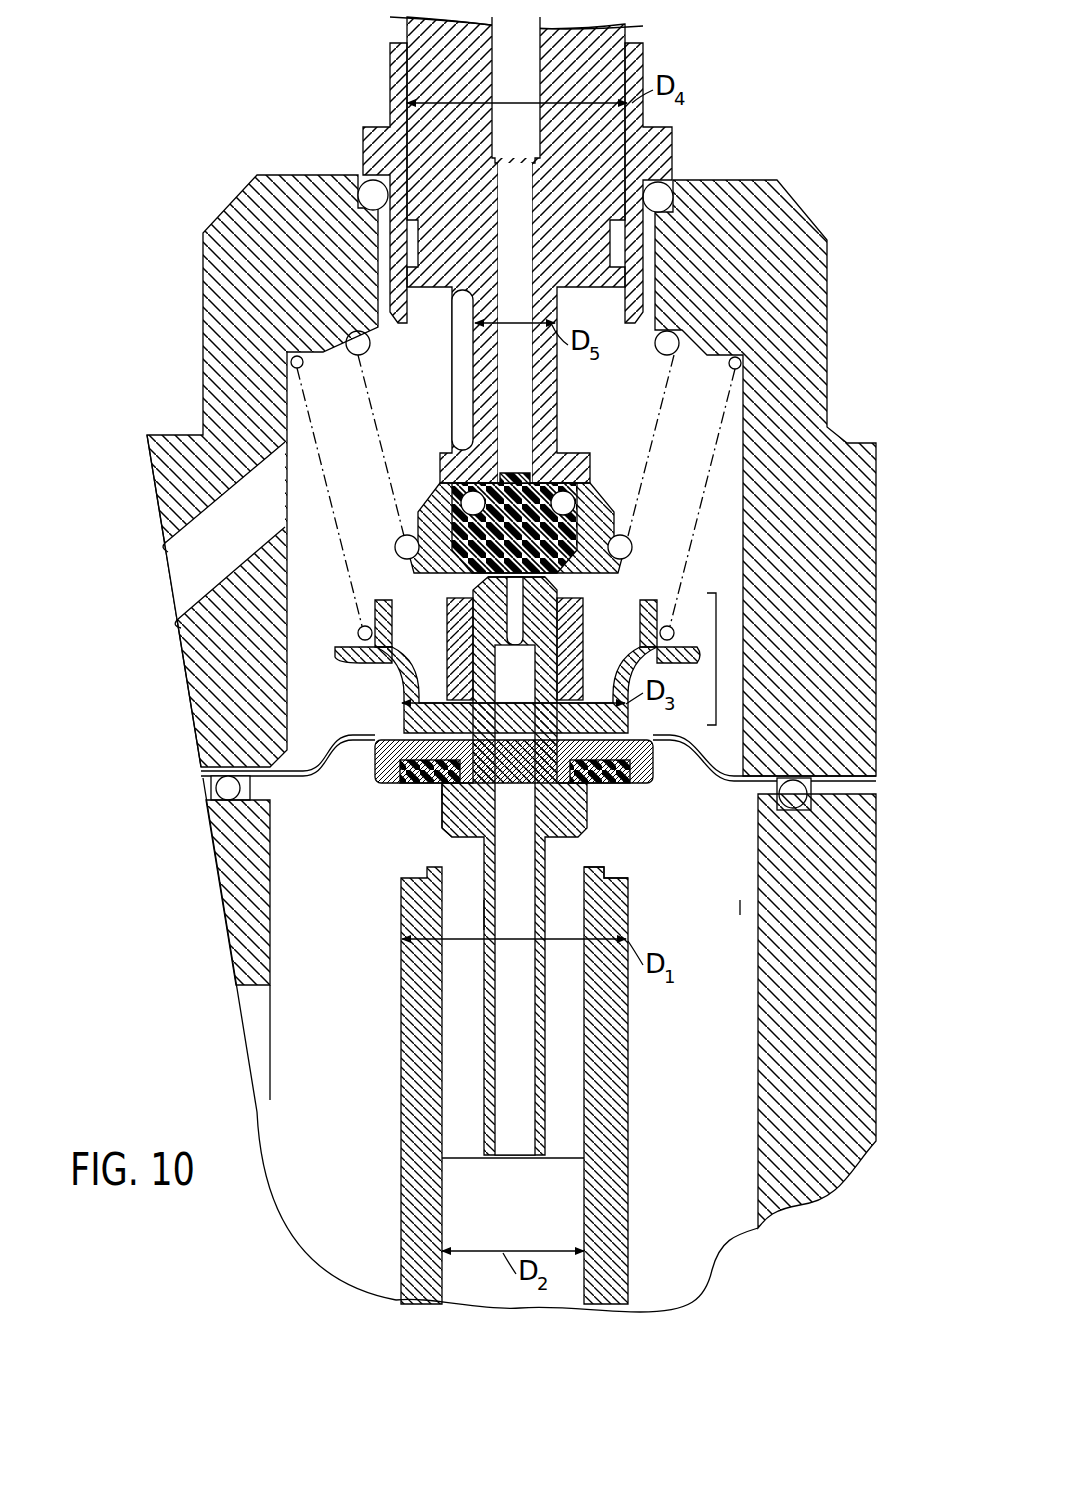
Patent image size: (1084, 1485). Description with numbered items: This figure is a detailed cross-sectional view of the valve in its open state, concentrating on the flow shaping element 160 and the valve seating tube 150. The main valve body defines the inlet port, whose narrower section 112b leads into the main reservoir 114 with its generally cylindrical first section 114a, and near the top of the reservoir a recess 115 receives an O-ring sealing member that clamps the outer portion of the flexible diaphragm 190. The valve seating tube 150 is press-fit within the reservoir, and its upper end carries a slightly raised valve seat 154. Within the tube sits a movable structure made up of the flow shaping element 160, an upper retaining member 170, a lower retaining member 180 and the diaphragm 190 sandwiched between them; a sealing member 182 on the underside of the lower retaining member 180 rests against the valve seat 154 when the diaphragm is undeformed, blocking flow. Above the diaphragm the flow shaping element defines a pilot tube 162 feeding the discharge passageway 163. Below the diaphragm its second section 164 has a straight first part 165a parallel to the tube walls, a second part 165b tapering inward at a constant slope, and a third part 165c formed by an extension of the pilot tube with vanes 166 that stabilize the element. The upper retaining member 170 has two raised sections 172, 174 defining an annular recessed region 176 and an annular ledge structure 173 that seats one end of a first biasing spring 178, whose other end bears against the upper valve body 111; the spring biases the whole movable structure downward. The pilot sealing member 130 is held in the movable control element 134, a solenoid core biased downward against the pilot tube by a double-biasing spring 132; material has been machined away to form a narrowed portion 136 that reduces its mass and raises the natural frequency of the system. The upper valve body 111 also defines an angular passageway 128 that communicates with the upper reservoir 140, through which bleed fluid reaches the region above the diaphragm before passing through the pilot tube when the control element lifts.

The upper valve body 111 is at (246, 188).
The second section of inlet port 112b is at (245, 1000).
The main reservoir 114 is at (722, 1036).
The first section of main reservoir 114a is at (740, 912).
The recess 115 is at (250, 790).
The angular passageway 128 is at (178, 550).
The pilot sealing member 130 is at (467, 510).
The double-biasing spring 132 is at (645, 426).
The movable control element 134 is at (428, 78).
The narrowed portion 136 is at (448, 362).
The upper reservoir 140 is at (297, 443).
The valve seating tube 150 is at (630, 1110).
The valve seat 154 is at (610, 870).
The flow shaping element 160 is at (566, 828).
The pilot tube 162 is at (505, 575).
The discharge passageway 163 is at (500, 1160).
The second section of flow shaping element 164 is at (456, 826).
The first part 165a is at (440, 797).
The second part 165b is at (441, 841).
The third part 165c is at (487, 912).
The vanes 166 is at (456, 1064).
The upper retaining member 170 is at (718, 656).
The raised section 172 is at (452, 648).
The annular ledge structure 173 is at (360, 629).
The raised section 174 is at (350, 660).
The annular recessed region 176 is at (412, 680).
The first biasing spring 178 is at (705, 468).
The lower retaining member 180 is at (651, 778).
The sealing member 182 is at (598, 788).
The flexible diaphragm 190 is at (736, 781).